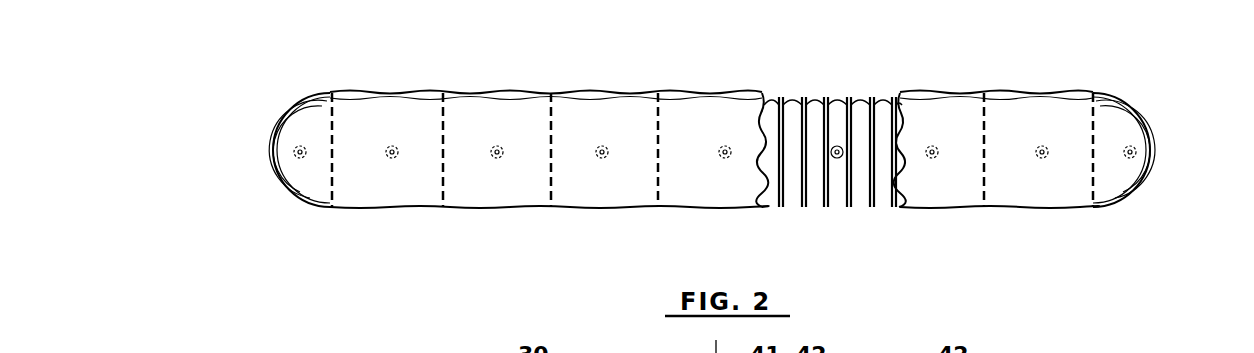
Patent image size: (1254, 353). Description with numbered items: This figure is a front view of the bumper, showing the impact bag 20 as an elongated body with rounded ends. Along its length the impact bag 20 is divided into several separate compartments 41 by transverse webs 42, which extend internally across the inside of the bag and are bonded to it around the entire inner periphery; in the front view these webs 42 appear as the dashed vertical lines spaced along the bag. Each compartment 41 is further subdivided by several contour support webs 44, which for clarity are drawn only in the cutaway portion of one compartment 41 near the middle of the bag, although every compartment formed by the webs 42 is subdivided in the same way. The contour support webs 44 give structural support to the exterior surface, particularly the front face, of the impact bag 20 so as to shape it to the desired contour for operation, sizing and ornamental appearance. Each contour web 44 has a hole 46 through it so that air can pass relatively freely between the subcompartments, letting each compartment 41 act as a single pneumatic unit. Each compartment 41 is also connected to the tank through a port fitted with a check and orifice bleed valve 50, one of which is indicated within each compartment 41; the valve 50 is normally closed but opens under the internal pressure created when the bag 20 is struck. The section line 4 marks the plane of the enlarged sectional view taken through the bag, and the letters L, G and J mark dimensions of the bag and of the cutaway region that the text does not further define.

The section line 4— 4 is at (358, 152).
The impact bag 20 is at (322, 190).
The compartment 41 is at (895, 82).
The transverse web 42 is at (334, 125).
The contour support web 44 is at (823, 182).
The hole 46 is at (836, 149).
The check and orifice bleed valve 50 is at (296, 156).
The length dimension L is at (300, 137).
The width dimension G is at (1093, 92).
The spacing dimension J is at (848, 212).